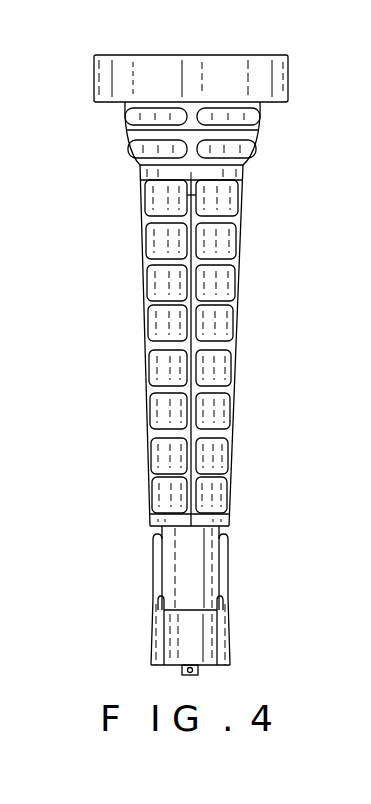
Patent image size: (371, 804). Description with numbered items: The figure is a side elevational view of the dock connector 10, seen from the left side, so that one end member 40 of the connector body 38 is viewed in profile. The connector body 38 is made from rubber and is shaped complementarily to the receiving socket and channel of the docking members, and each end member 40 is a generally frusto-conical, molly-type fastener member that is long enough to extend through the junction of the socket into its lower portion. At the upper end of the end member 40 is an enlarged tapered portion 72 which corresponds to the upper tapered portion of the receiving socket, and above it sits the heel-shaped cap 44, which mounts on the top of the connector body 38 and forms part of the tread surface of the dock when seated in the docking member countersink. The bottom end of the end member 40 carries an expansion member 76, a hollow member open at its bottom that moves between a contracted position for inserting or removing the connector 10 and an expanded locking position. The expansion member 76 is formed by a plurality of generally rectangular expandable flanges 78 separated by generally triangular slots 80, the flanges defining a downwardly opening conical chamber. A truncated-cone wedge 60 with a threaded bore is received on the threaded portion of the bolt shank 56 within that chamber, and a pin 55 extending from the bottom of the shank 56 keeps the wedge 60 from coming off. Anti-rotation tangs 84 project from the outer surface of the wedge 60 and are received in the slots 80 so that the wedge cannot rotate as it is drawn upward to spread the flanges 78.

The connector 10 is at (274, 254).
The cap 44 is at (152, 80).
The enlarged tapered portion 72 is at (127, 130).
The connector body 38 is at (141, 263).
The end member 40 is at (160, 325).
The expandable flange 78 is at (187, 563).
The wedge 60 is at (198, 628).
The expansion member 76 is at (229, 545).
The slot 80 is at (226, 566).
The anti-rotation tang 84 is at (158, 639).
The pin 55 is at (187, 677).
The shank 56 is at (198, 676).